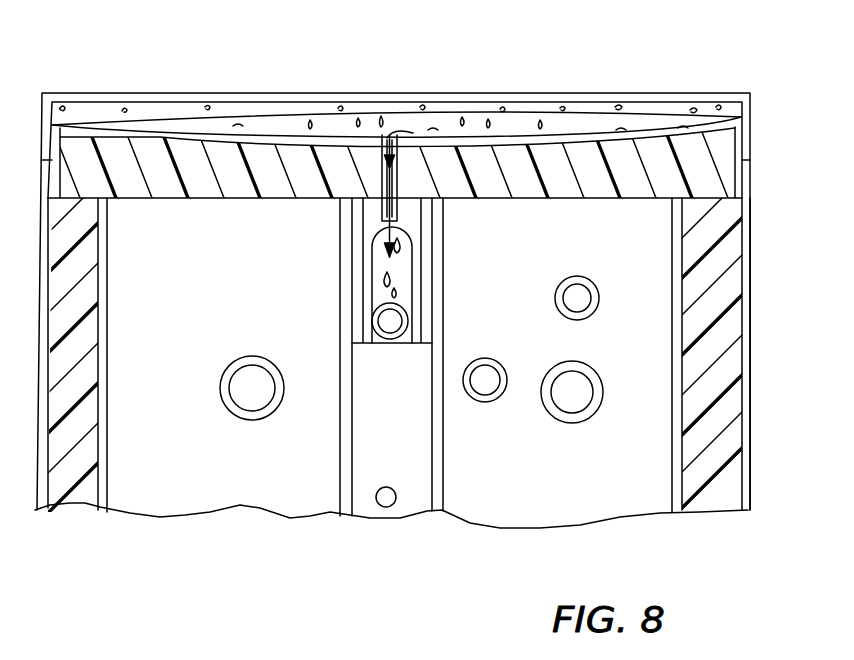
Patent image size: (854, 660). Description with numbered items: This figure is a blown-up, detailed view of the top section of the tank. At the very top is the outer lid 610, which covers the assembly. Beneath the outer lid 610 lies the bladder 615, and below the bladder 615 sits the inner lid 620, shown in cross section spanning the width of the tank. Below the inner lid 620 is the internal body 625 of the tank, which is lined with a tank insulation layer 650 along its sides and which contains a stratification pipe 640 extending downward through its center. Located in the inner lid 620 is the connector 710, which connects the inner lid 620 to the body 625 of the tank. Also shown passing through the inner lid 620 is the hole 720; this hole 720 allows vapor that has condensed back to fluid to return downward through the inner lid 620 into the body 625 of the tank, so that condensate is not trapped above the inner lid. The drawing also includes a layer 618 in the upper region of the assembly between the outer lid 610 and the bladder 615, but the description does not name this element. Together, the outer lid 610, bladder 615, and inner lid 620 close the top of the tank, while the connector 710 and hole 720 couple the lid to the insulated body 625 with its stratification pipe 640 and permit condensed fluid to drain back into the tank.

The outer lid 610 is at (40, 113).
The adhesive layer 618 is at (133, 110).
The bladder 615 is at (247, 115).
The inner lid 620 is at (113, 178).
The tank insulation layer 650 is at (80, 388).
The stratification pipe 640 is at (387, 451).
The connector 710 is at (399, 265).
The hole 720 is at (397, 187).
The body 625 is at (208, 487).